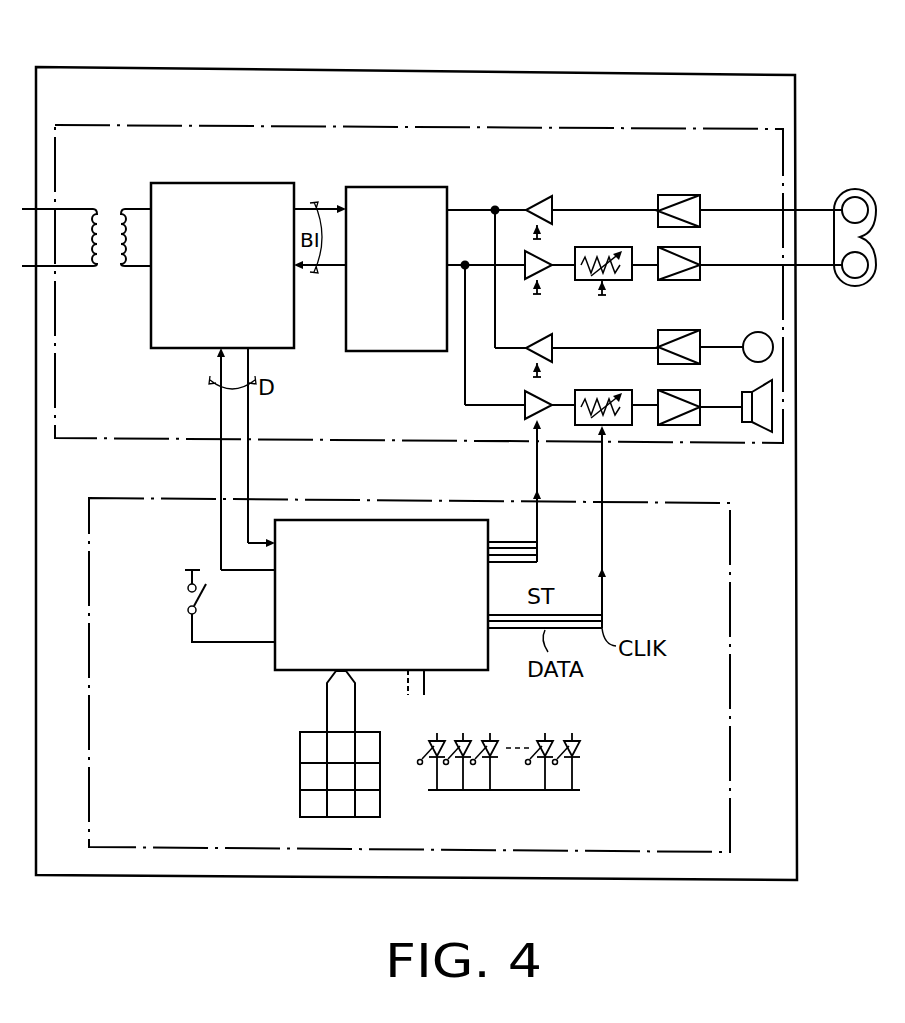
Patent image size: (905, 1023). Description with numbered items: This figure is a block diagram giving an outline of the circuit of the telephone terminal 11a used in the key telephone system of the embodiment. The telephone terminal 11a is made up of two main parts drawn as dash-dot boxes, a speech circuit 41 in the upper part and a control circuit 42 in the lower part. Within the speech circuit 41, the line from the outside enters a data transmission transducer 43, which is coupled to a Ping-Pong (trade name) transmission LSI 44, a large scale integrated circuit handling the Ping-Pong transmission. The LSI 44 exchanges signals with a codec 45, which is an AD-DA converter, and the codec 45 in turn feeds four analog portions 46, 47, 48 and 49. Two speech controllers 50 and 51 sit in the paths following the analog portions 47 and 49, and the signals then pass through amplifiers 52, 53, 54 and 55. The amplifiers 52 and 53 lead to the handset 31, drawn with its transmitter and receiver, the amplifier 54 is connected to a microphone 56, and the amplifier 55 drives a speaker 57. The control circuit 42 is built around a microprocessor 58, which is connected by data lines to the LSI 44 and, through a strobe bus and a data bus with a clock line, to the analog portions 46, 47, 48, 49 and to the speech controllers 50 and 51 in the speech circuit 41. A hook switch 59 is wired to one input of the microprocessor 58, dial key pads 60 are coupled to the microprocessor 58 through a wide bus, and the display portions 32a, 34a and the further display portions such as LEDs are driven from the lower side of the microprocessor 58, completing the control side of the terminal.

The telephone terminal 11a is at (555, 72).
The handset 31 is at (838, 196).
The display portion 32a is at (423, 752).
The display portion 34a is at (465, 762).
The speech circuit 41 is at (100, 443).
The control circuit 42 is at (668, 502).
The data transmission transducer 43 is at (110, 208).
The Ping-Pong transmission LSI 44 is at (222, 183).
The codec 45 is at (388, 187).
The analog portion 46 is at (548, 197).
The analog portion 47 is at (560, 255).
The analog portion 48 is at (545, 346).
The analog portion 49 is at (560, 393).
The speech controller 50 is at (615, 282).
The speech controller 51 is at (620, 427).
The amplifier 52 is at (678, 193).
The amplifier 53 is at (690, 250).
The amplifier 54 is at (695, 330).
The amplifier 55 is at (690, 390).
The microphone 56 is at (773, 347).
The speaker 57 is at (772, 407).
The microprocessor 58 is at (360, 518).
The hook switch 59 is at (186, 597).
The dial key pads 60 is at (300, 750).